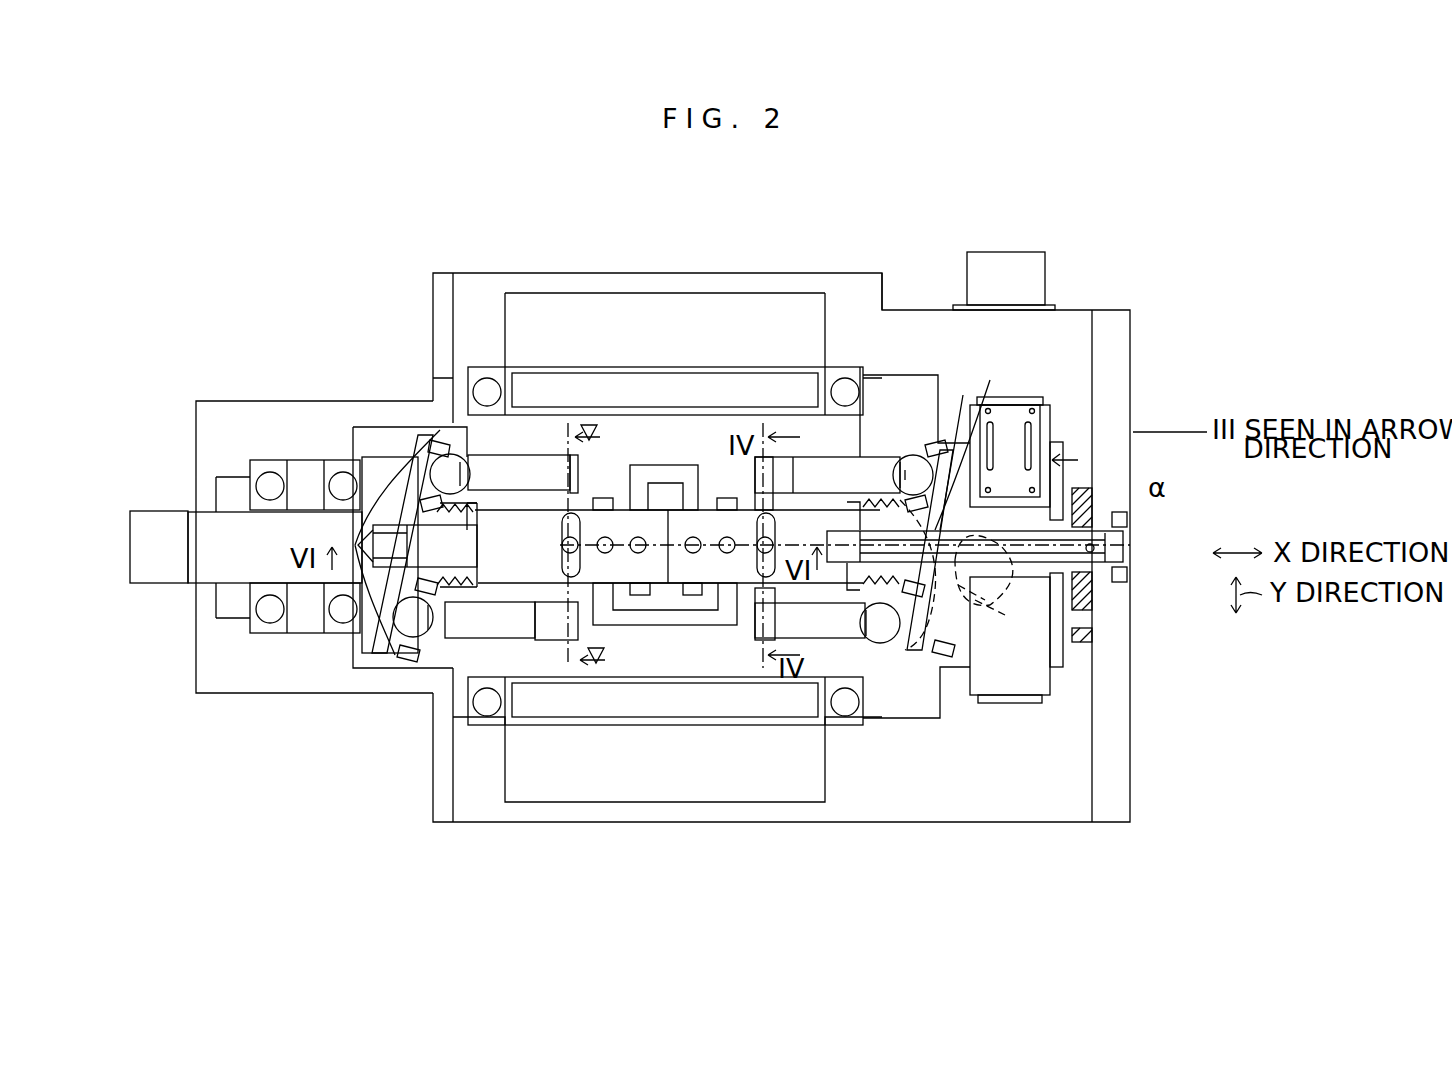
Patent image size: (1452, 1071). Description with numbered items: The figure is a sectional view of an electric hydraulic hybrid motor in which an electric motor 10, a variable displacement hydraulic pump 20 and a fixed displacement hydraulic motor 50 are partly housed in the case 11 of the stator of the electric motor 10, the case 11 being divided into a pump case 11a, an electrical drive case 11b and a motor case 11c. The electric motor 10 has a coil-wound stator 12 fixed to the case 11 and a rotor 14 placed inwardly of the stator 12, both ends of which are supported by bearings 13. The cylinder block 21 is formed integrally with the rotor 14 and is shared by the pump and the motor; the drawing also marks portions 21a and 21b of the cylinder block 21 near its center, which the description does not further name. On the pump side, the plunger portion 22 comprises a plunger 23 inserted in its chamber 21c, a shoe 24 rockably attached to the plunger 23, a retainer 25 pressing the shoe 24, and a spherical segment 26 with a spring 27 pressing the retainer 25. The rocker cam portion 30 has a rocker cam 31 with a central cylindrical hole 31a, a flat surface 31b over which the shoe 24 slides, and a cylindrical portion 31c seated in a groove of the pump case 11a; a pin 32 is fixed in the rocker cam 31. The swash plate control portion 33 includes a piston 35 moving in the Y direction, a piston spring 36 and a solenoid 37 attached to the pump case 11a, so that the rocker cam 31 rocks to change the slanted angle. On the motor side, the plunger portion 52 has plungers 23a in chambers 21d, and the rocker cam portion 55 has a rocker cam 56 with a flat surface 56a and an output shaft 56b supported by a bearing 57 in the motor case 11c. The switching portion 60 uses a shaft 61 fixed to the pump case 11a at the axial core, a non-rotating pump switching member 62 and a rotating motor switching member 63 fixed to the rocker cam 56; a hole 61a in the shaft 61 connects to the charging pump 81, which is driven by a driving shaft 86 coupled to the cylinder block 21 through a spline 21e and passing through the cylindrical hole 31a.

The electric motor 10 is at (705, 272).
The case 11 is at (777, 273).
The pump case 11a is at (1075, 320).
The electrical drive case 11b is at (638, 273).
The motor case 11c is at (270, 401).
The stator 12 is at (803, 293).
The bearings 13 is at (480, 367).
The rotor 14 is at (540, 373).
The variable displacement hydraulic pump 20 is at (885, 400).
The cylinder block 21 is at (788, 420).
The rotor center boss 21a is at (682, 480).
The rotor lower boss 21b is at (684, 620).
The chamber 21c is at (800, 470).
The chamber 21d is at (555, 632).
The spline 21e is at (778, 620).
The plunger portion 22 is at (885, 700).
The plunger 23 is at (872, 480).
The plunger 23a is at (502, 475).
The shoe 24 is at (935, 510).
The retainer 25 is at (926, 445).
The spherical segment 26 is at (930, 655).
The spring 27 is at (845, 600).
The rocker cam portion 30 is at (1000, 620).
The rocker cam 31 is at (925, 660).
The cylindrical hole 31a is at (990, 592).
The flat surface 31b is at (1062, 470).
The cylindrical portion 31c is at (990, 680).
The pin 32 is at (1062, 592).
The swash plate control portion 33 is at (1075, 435).
The piston 35 is at (1045, 432).
The piston spring 36 is at (1030, 400).
The solenoid 37 is at (1020, 252).
The fixed displacement hydraulic motor 50 is at (445, 425).
The plunger portion 52 is at (522, 622).
The rocker cam portion 55 is at (395, 655).
The rocker cam 56 is at (365, 640).
The flat surface 56a is at (407, 567).
The output shaft 56b is at (160, 583).
The bearing 57 is at (262, 633).
The switching portion 60 is at (633, 440).
The shaft 61 is at (1128, 548).
The hole 61a is at (1127, 519).
The pump switching member 62 is at (748, 577).
The motor switching member 63 is at (627, 577).
The charging pump 81 is at (1095, 590).
The driving shaft 86 is at (985, 612).